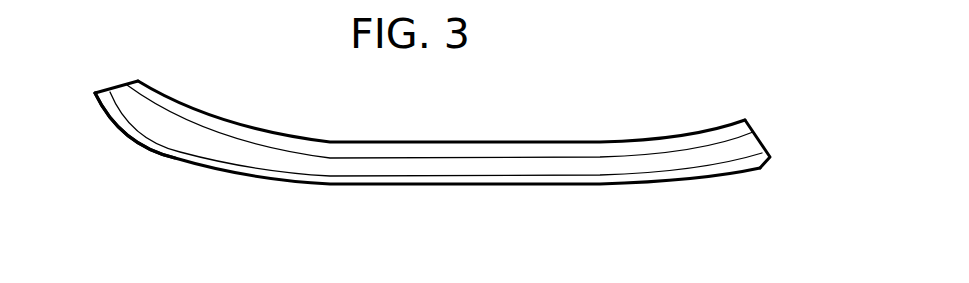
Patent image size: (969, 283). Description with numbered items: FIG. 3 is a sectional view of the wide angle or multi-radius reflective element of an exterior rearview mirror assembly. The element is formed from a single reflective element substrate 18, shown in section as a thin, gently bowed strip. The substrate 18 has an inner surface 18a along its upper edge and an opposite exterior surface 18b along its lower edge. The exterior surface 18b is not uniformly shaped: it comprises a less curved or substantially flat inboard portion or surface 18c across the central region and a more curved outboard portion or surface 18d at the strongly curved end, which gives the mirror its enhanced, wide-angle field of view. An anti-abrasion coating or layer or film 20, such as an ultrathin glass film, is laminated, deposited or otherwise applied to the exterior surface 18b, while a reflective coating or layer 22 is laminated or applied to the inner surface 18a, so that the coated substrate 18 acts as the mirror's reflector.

The reflective element substrate 18 is at (773, 134).
The inner surface 18a is at (417, 138).
The exterior surface 18b is at (408, 194).
The inboard portion 18c is at (569, 204).
The outboard portion 18d is at (142, 161).
The anti-abrasion coating 20 is at (747, 172).
The reflective coating 22 is at (687, 137).